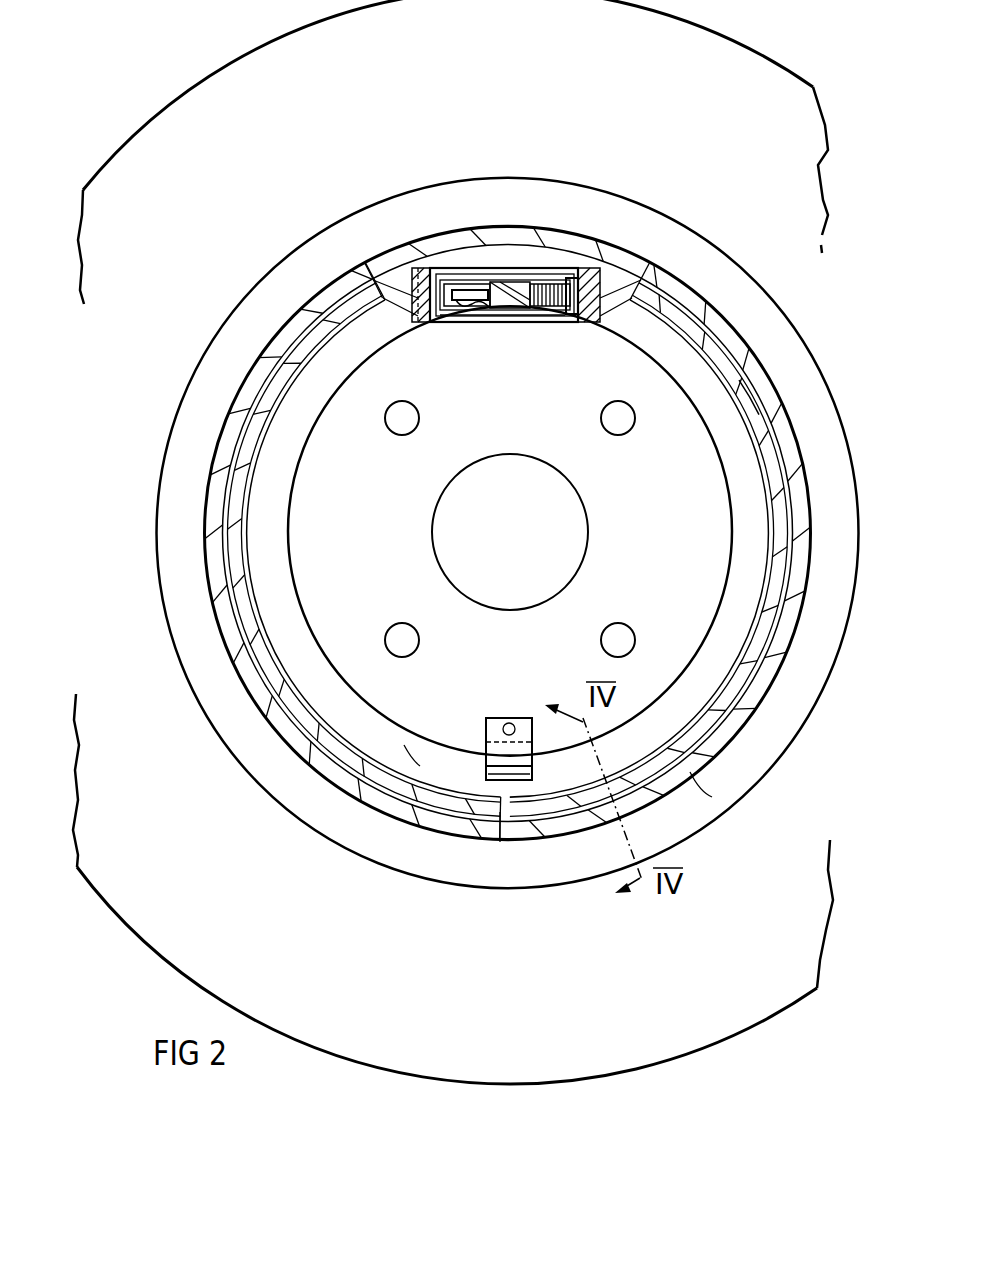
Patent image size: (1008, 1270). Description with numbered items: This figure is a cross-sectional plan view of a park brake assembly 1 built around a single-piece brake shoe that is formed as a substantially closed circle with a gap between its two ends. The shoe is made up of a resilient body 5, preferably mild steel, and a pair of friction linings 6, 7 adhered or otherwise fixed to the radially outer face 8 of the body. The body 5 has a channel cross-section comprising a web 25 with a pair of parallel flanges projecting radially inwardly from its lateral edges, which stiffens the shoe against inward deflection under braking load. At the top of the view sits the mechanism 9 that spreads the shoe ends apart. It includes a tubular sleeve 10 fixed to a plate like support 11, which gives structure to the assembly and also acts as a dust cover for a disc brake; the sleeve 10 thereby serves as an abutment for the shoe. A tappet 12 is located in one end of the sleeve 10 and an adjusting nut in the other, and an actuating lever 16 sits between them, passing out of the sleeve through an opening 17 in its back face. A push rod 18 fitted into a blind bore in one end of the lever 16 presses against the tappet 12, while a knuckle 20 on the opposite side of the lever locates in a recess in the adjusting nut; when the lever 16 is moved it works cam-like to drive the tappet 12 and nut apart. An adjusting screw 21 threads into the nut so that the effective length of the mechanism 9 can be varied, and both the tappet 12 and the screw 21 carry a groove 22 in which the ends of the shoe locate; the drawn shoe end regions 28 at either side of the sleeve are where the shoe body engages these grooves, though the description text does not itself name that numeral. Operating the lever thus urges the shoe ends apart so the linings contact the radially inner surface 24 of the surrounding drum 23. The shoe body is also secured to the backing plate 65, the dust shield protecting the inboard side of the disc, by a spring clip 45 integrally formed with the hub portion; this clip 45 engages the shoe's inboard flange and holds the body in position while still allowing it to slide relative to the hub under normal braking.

The park brake assembly 1 is at (130, 530).
The body 5 is at (662, 722).
The friction lining 6 is at (765, 650).
The friction lining 7 is at (345, 757).
The radially outer face 8 is at (500, 842).
The mechanism 9 is at (427, 252).
The tubular sleeve 10 is at (496, 268).
The plate like support 11 is at (345, 835).
The tappet 12 is at (470, 268).
The actuating lever 16 is at (520, 322).
The opening 17 is at (466, 322).
The push rod 18 is at (535, 268).
The knuckle 20 is at (575, 322).
The adjusting screw 21 is at (572, 270).
The groove 22 is at (420, 282).
The drum 23 is at (808, 556).
The radially inner surface 24 is at (758, 399).
The web 25 is at (700, 784).
The shoe end 28 is at (432, 323).
The spring clip 45 is at (490, 752).
The backing plate 65 is at (380, 549).